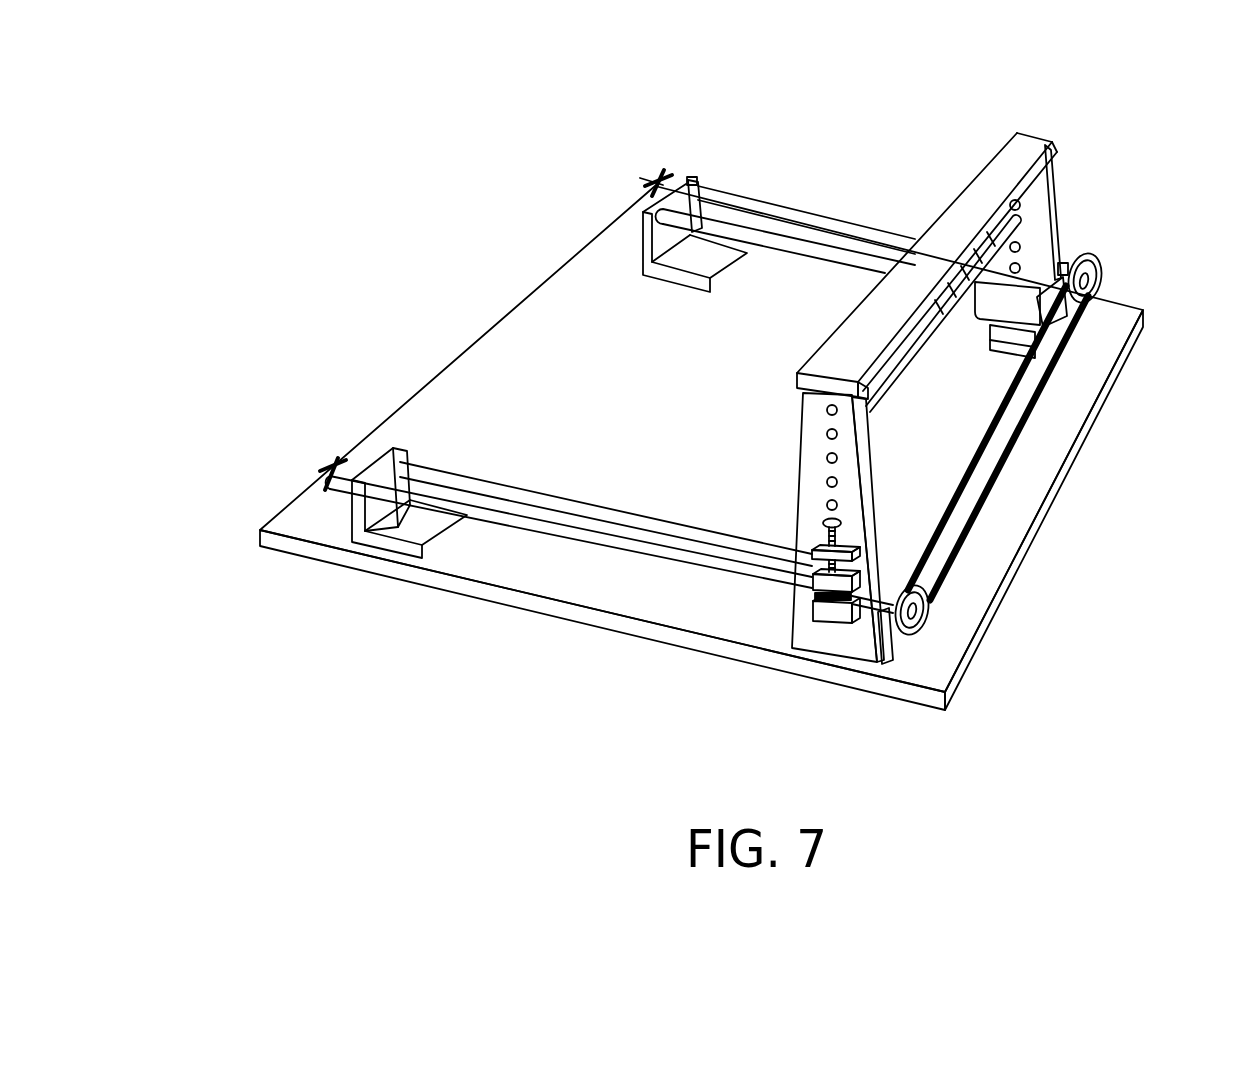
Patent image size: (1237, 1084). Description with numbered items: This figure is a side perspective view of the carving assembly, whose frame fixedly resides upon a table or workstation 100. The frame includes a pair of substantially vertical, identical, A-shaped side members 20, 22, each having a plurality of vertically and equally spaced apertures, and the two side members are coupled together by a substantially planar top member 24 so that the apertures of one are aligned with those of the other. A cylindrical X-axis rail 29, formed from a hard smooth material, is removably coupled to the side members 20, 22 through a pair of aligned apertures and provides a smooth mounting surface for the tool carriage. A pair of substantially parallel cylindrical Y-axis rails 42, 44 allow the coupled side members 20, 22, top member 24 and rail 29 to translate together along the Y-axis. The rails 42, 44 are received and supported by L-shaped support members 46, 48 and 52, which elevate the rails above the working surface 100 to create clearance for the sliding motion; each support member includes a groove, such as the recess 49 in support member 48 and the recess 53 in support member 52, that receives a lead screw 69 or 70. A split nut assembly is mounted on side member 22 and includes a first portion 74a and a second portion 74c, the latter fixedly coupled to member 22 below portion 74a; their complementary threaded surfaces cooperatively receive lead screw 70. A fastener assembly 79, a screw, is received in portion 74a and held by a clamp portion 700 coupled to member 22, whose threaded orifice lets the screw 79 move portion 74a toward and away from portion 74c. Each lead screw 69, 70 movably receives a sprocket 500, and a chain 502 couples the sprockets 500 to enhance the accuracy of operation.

The table or workstation 100 is at (616, 377).
The L-shaped support member 52 is at (375, 545).
The groove or recess 53 is at (370, 462).
The lead screw 70 is at (325, 470).
The Y-axis rail 44 is at (546, 492).
The Y-axis rail 42 is at (810, 258).
The lead screw 69 is at (650, 184).
The L-shaped support member 46 is at (680, 198).
The side member 22 is at (808, 505).
The clamp portion 700 is at (845, 538).
The first portion of split nut assembly 74a is at (820, 583).
The fastener assembly 79 is at (813, 582).
The second portion of split nut assembly 74c is at (828, 612).
The top member 24 is at (977, 190).
The X-axis rail 29 is at (897, 378).
The side member 20 is at (1032, 205).
The L-shaped support member 48 is at (993, 345).
The groove or recess 49 is at (1067, 250).
The sprocket 500 is at (925, 623).
The chain 502 is at (978, 505).